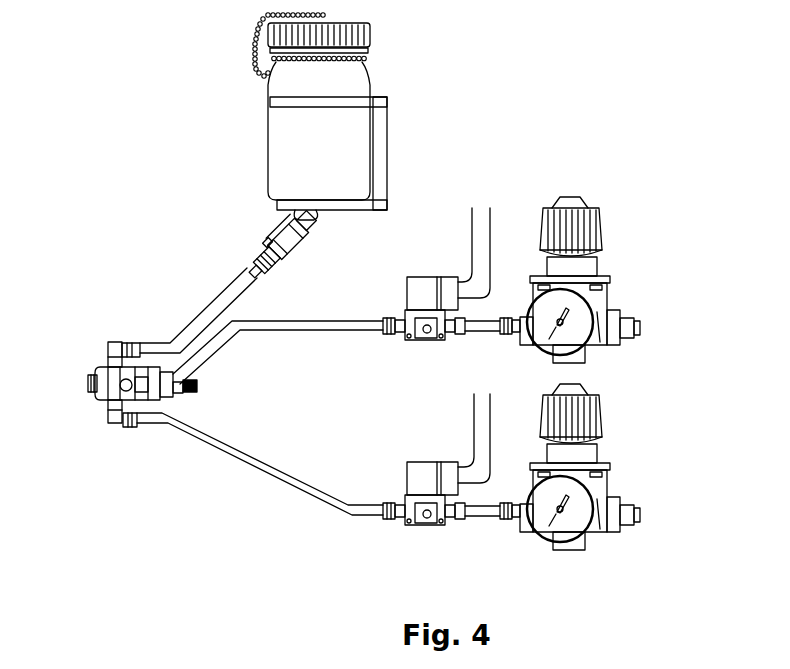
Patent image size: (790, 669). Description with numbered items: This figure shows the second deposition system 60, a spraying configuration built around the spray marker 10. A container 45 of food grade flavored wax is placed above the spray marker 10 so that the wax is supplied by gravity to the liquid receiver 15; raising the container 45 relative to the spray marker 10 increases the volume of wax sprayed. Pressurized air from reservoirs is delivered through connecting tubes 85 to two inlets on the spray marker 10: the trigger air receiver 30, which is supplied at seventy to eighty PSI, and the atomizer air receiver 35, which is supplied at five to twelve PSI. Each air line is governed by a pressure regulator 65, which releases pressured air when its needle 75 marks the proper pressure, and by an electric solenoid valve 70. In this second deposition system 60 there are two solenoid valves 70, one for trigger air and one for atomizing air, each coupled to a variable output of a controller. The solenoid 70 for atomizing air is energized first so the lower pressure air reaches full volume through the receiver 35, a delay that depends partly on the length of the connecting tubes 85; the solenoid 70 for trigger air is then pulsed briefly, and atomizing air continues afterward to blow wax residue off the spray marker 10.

The second deposition system 60 is at (84, 118).
The container 45 is at (378, 88).
The connecting tubes 85 is at (217, 308).
The spray marker 10 is at (101, 336).
The liquid receiver 15 is at (115, 342).
The trigger air receiver 30 is at (84, 383).
The atomizer air receiver 35 is at (118, 422).
The electric solenoid valve 70 is at (407, 294).
The pressure regulator 65 is at (603, 232).
The needle 75 is at (553, 326).